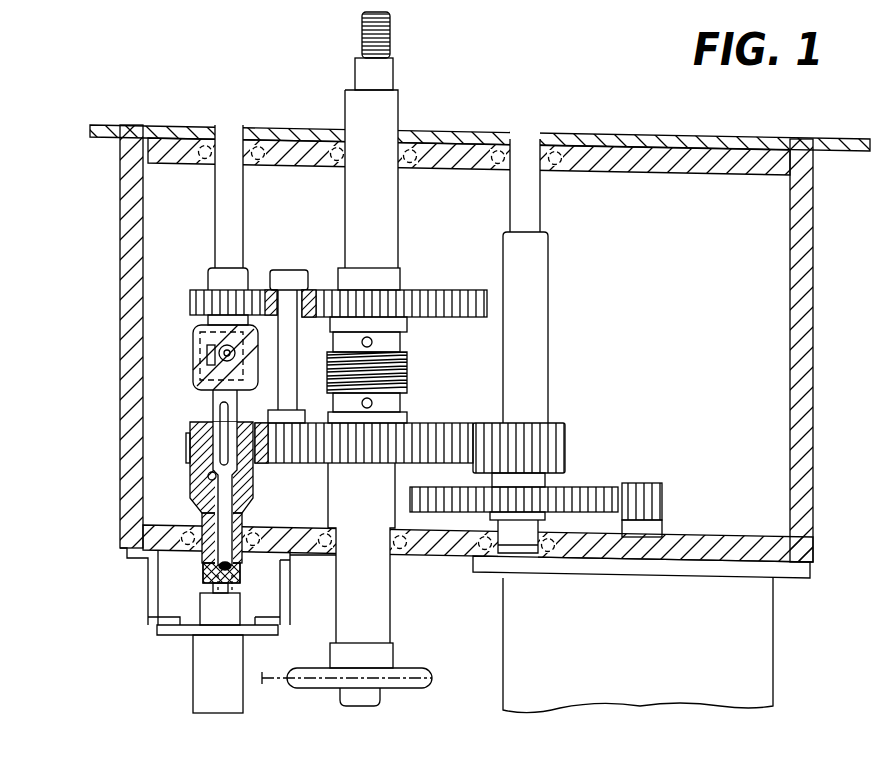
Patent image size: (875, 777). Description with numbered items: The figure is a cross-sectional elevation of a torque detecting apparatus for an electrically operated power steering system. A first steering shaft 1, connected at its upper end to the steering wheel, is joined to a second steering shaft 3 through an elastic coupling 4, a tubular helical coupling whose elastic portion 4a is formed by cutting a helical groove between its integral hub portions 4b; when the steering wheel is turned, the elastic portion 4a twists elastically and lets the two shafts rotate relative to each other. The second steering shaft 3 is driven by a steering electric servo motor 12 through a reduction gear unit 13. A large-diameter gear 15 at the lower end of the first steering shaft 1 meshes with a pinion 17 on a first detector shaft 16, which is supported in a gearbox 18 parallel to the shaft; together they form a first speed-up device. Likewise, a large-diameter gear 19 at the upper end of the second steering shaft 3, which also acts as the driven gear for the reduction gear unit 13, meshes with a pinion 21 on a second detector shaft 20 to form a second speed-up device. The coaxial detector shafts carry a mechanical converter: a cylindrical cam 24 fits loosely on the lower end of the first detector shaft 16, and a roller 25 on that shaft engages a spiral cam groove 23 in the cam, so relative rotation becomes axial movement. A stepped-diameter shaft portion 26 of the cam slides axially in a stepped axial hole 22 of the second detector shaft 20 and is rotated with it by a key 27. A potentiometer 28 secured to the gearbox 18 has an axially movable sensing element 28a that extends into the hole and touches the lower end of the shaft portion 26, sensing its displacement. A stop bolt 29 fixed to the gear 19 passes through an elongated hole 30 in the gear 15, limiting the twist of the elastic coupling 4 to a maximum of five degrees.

The first steering shaft 1 is at (392, 104).
The second steering shaft 3 is at (378, 624).
The elastic coupling 4 is at (420, 382).
The elastic portion 4a is at (410, 364).
The hub portions 4b is at (393, 401).
The steering electric servo motor 12 is at (757, 630).
The reduction gear unit 13 is at (576, 442).
The large-diameter gear 15 is at (456, 292).
The first detector shaft 16 is at (226, 228).
The pinion 17 is at (192, 302).
The gearbox 18 is at (122, 248).
The large-diameter gear 19 is at (313, 463).
The second detector shaft 20 is at (203, 510).
The pinion 21 is at (188, 450).
The stepped axial hole 22 is at (211, 482).
The spiral cam groove 23 is at (195, 366).
The cylindrical cam 24 is at (203, 348).
The roller 25 is at (208, 342).
The stepped-diameter shaft portion 26 is at (213, 400).
The key 27 is at (222, 435).
The potentiometer 28 is at (200, 680).
The sensing element 28a is at (213, 565).
The stop bolt 29 is at (297, 280).
The elongated hole 30 is at (284, 282).